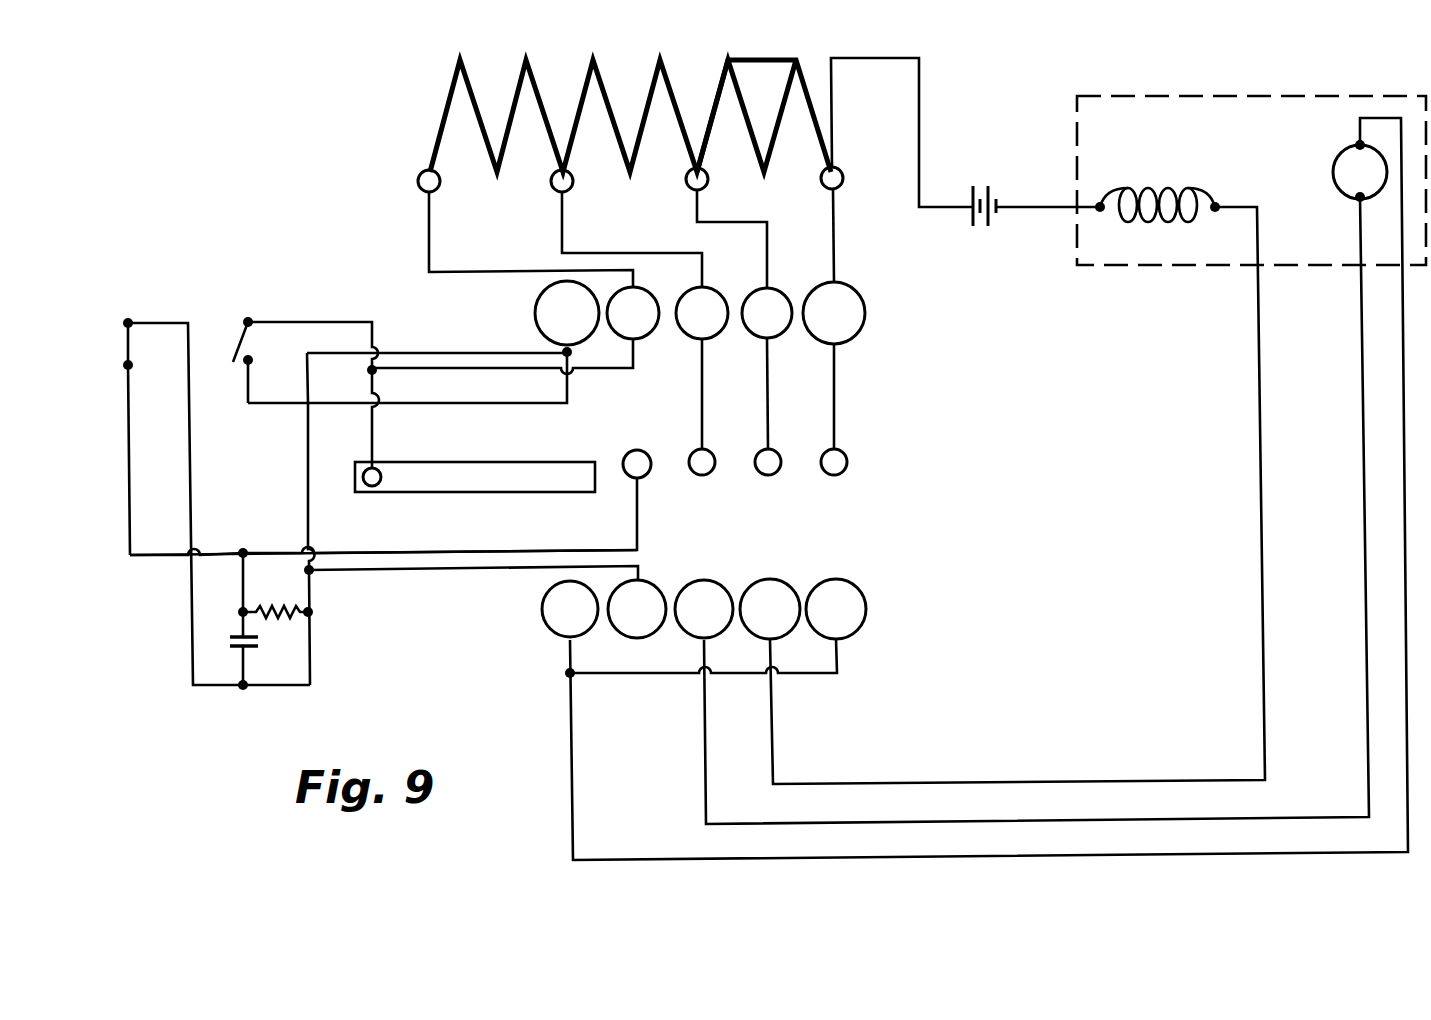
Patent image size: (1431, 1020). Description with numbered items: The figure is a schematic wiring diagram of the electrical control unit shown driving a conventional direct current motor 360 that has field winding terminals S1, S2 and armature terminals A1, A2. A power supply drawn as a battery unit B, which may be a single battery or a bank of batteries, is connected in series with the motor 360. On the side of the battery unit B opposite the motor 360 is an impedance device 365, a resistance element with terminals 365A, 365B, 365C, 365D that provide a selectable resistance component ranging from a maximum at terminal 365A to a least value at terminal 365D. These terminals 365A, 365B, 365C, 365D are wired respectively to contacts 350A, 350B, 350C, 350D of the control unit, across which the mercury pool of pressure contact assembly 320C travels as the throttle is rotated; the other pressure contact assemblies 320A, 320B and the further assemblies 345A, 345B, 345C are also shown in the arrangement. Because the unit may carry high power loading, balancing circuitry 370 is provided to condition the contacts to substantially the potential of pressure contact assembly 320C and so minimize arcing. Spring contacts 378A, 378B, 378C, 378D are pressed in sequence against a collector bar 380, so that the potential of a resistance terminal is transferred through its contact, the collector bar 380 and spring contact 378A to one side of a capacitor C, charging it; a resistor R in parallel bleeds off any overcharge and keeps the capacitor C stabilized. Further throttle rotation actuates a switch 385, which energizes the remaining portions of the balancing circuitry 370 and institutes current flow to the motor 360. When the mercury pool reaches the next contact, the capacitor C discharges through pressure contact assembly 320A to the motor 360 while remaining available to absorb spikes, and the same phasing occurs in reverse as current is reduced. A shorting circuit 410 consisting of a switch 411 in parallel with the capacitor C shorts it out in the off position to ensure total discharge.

The impedance device 365 is at (440, 133).
The resistance terminal 365A is at (434, 189).
The resistance terminal 365B is at (567, 184).
The resistance terminal 365C is at (702, 184).
The resistance terminal 365D is at (836, 183).
The contact 350A is at (644, 330).
The contact 350B is at (727, 280).
The contact 350C is at (771, 328).
The contact 350D is at (845, 332).
The pressure contact assembly 320A is at (636, 624).
The pressure contact assembly 320B is at (782, 583).
The pressure contact assembly 320C is at (536, 309).
The relay coil 345A is at (552, 621).
The relay coil 345B is at (714, 587).
The relay coil 345C is at (864, 591).
The spring contact 378A is at (631, 453).
The spring contact 378B is at (700, 475).
The spring contact 378C is at (768, 475).
The spring contact 378D is at (843, 453).
The collector bar 380 is at (473, 463).
The switch 385 is at (238, 322).
The balancing circuitry 370 is at (405, 580).
The shorting circuit 410 is at (153, 312).
The switch 411 is at (118, 332).
The direct current motor 360 is at (1135, 96).
The battery unit B is at (980, 226).
The resistor R is at (302, 603).
The capacitor C is at (245, 651).
The field winding terminal S1 is at (1147, 202).
The field winding terminal S2 is at (1017, 485).
The armature terminal A1 is at (989, 489).
The armature terminal A2 is at (1036, 508).